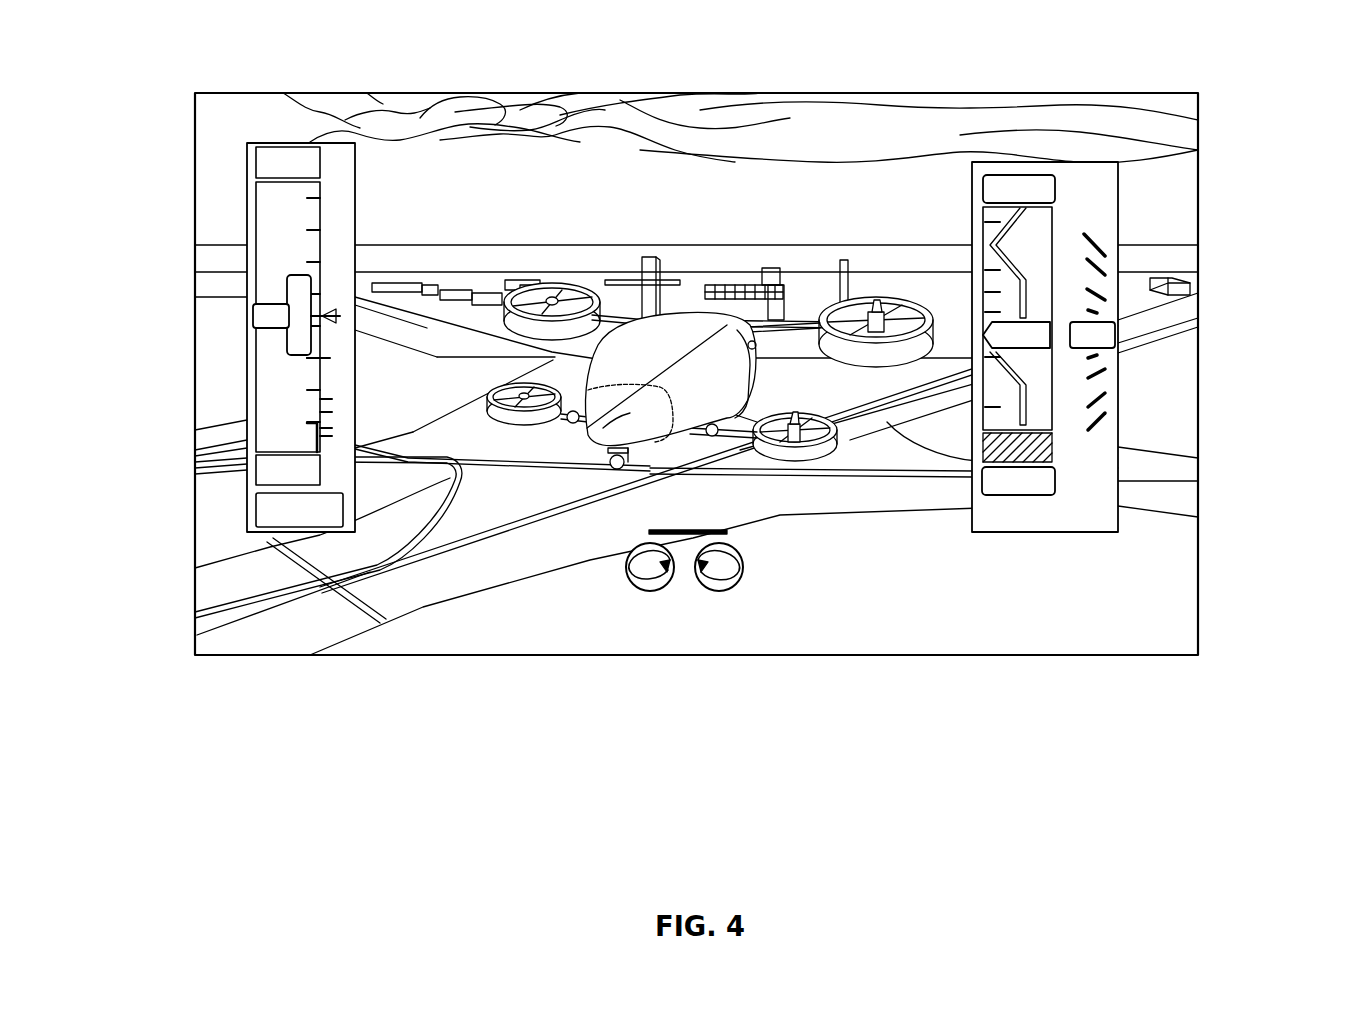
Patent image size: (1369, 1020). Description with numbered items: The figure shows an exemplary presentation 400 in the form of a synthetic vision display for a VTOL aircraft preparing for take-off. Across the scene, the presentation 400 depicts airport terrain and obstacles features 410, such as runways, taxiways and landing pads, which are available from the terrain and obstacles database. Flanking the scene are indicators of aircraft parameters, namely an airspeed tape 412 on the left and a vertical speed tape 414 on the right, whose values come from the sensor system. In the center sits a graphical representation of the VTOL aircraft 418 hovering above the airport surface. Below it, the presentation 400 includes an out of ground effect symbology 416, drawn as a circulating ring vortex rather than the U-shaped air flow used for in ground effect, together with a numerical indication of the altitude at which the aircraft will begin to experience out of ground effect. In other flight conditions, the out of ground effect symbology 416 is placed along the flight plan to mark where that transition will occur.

The presentation 400 is at (205, 55).
The airport terrain and obstacles features 410 is at (378, 592).
The airspeed tape 412 is at (250, 488).
The vertical speed tape 414 is at (1107, 492).
The out of ground effect symbology 416 is at (628, 585).
The graphical representation of the VTOL aircraft 418 is at (622, 413).